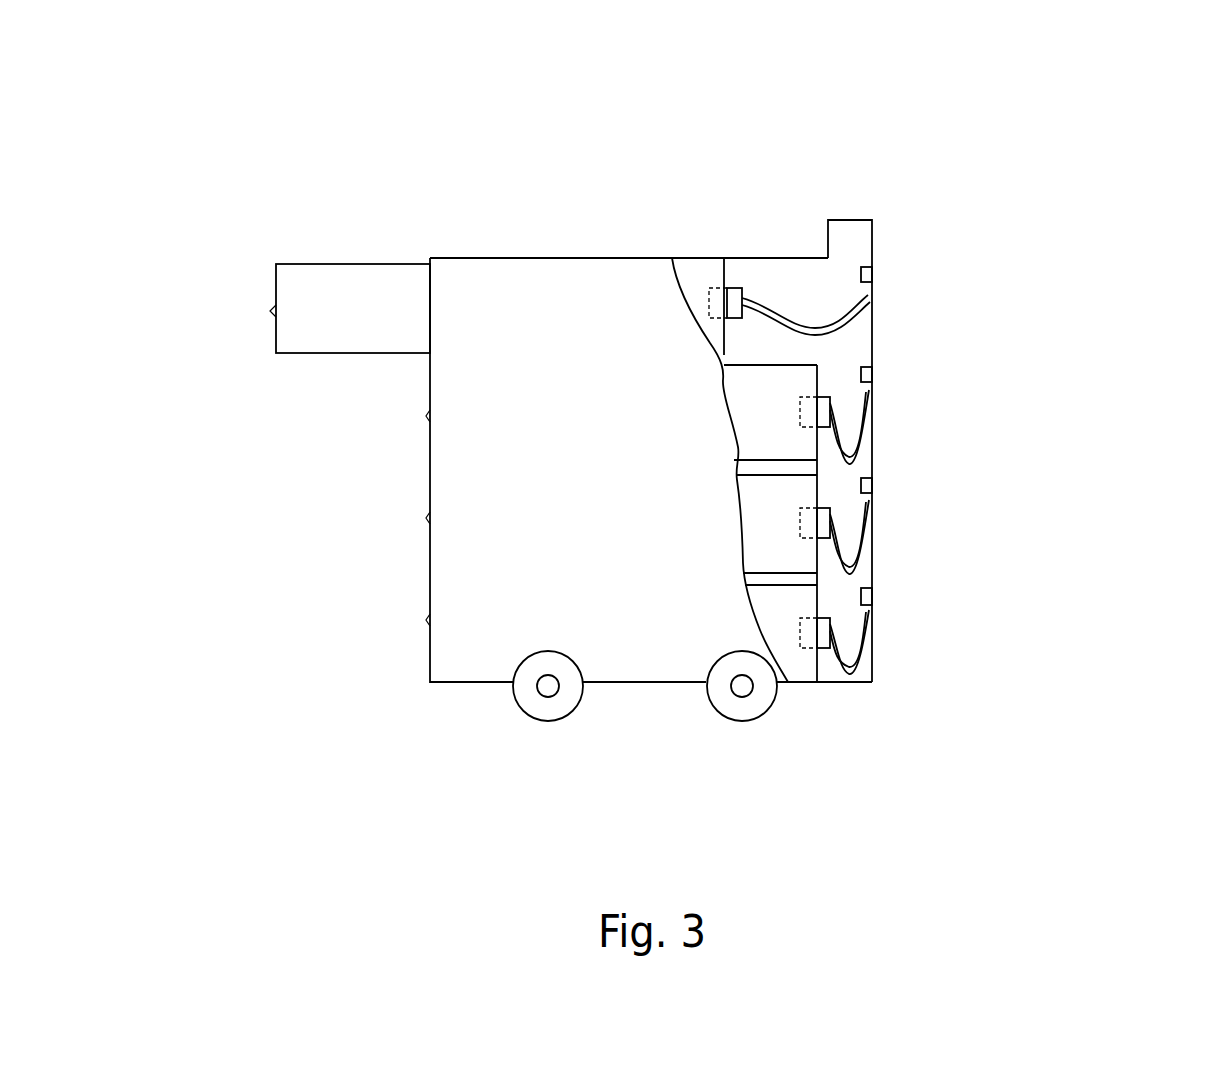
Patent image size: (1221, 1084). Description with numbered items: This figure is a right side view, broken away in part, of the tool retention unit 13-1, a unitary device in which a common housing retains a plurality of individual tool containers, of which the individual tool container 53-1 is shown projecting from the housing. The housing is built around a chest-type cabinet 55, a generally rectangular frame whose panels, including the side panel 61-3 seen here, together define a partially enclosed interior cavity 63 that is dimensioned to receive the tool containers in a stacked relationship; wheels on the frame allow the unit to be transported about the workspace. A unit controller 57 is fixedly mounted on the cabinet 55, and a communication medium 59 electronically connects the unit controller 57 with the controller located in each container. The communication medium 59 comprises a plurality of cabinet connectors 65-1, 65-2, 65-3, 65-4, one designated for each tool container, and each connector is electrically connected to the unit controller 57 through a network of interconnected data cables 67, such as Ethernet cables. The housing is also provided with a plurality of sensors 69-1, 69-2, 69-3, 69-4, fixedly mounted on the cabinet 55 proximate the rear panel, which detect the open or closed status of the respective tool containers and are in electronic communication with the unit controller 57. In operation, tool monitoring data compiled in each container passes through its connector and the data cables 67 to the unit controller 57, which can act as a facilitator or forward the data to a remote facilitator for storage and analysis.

The tool retention unit 13-1 is at (923, 757).
The individual tool container 53-1 is at (326, 355).
The chest-type cabinet 55 is at (688, 255).
The unit controller 57 is at (878, 238).
The communication medium 59 is at (876, 342).
The side panel 61-3 is at (577, 357).
The interior cavity 63 is at (800, 284).
The cabinet connector 65-1 is at (738, 290).
The cabinet connector 65-2 is at (817, 410).
The cabinet connector 65-3 is at (817, 525).
The cabinet connector 65-4 is at (822, 650).
The data cables 67 is at (875, 448).
The sensor 69-1 is at (875, 282).
The sensor 69-2 is at (875, 380).
The sensor 69-3 is at (875, 493).
The sensor 69-4 is at (875, 597).